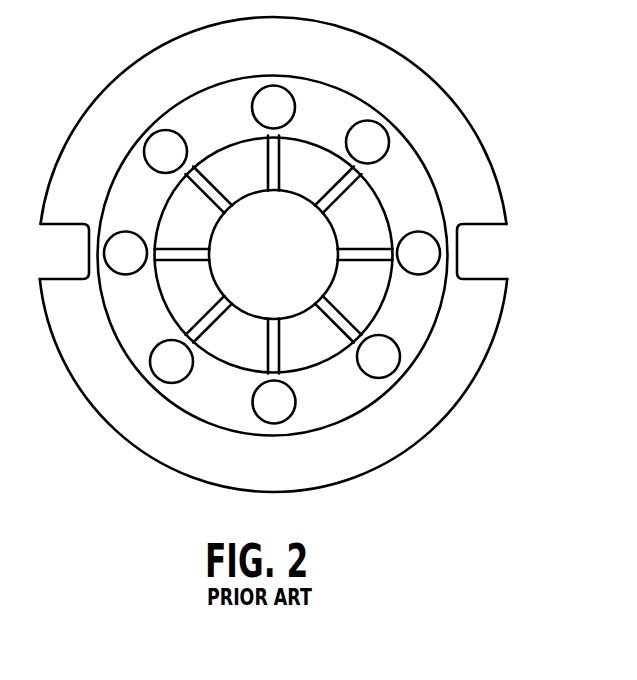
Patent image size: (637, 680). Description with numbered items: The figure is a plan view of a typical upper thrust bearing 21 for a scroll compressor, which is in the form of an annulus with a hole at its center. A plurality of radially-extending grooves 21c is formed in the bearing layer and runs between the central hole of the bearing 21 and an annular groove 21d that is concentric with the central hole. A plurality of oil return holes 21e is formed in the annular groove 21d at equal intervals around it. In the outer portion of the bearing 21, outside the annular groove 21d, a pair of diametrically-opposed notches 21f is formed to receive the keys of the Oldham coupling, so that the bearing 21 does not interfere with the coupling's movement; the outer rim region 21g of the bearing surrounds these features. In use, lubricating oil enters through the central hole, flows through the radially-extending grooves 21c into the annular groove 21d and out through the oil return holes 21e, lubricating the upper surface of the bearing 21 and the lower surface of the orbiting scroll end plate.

The upper thrust bearing 21 is at (412, 58).
The radially-extending grooves 21c is at (343, 180).
The annular groove 21d is at (428, 198).
The oil return holes 21e is at (390, 360).
The notches 21f is at (482, 253).
The outer rim 21g is at (383, 448).